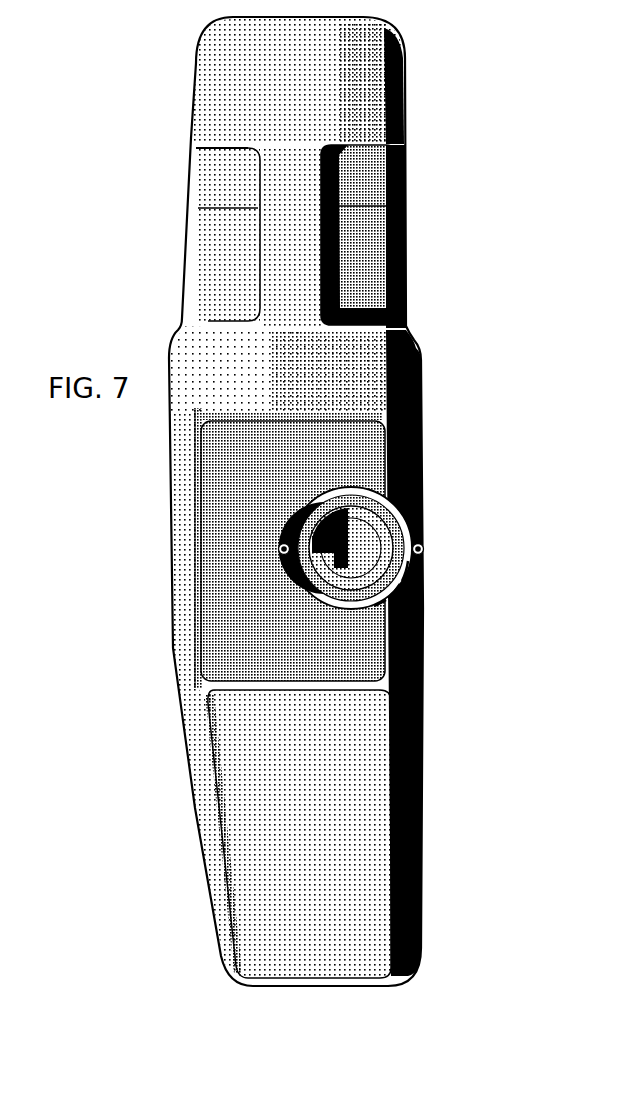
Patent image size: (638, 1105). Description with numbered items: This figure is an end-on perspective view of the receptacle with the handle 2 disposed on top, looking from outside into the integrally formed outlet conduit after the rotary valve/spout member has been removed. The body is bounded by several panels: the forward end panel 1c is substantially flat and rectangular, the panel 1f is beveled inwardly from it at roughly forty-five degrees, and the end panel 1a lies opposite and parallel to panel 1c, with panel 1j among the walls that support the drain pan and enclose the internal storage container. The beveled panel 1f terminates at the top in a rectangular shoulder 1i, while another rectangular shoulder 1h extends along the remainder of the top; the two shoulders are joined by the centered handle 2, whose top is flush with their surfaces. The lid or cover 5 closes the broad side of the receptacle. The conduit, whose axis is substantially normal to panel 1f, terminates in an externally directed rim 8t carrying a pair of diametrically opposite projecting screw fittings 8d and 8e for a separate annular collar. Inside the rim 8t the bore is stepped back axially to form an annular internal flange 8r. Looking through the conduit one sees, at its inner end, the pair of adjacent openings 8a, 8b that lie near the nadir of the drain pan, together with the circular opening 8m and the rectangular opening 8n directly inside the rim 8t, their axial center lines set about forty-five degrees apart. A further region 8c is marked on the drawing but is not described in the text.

The end panel 1a is at (398, 83).
The rectangular shoulder 1h is at (222, 80).
The panel 1j is at (205, 227).
The handle 2 is at (256, 266).
The rectangular shoulder 1i is at (247, 370).
The beveled sidewall panel 1f is at (207, 476).
The forward end panel 1c is at (302, 948).
The lid or cover 5 is at (415, 768).
The dial housing portion 8c is at (413, 428).
The opening 8a is at (340, 502).
The opening 8b is at (337, 527).
The projecting screw fitting 8d is at (415, 541).
The projecting screw fitting 8e is at (271, 543).
The circular opening 8m is at (290, 532).
The externally-directed rim 8t is at (404, 560).
The annular internal flange 8r is at (398, 578).
The rectangular opening 8n is at (397, 597).